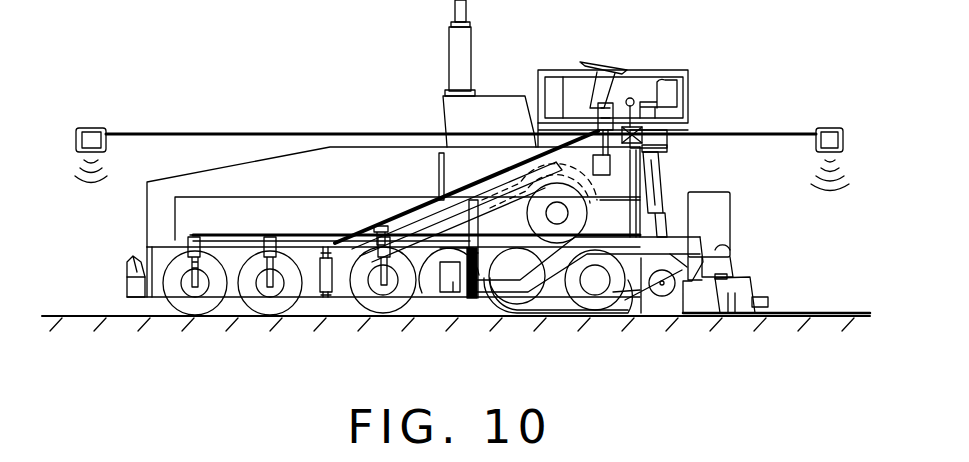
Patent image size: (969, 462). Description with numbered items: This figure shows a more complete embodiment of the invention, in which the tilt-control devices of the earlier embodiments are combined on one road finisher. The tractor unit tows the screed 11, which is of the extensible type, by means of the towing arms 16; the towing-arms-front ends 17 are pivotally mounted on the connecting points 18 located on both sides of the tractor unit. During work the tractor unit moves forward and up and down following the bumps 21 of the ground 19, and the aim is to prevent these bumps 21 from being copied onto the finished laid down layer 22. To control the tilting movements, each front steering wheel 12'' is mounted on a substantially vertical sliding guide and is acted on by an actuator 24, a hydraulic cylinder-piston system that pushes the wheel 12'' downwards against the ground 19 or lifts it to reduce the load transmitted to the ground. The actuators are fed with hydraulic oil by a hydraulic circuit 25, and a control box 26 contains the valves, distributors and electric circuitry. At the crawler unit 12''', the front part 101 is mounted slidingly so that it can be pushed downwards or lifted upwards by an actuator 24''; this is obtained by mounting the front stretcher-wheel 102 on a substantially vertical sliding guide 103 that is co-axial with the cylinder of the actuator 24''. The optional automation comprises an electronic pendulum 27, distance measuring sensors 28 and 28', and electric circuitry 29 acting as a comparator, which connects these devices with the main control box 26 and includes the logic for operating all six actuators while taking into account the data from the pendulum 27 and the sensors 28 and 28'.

The screed 11 is at (703, 300).
The steering wheel 12'' is at (232, 303).
The crawler unit 12''' is at (553, 341).
The towing arms 16 is at (618, 310).
The towing-arms-front ends 17 is at (477, 303).
The connecting points 18 is at (465, 287).
The ground 19 is at (127, 324).
The bumps 21 is at (668, 315).
The laid down layer 22 is at (870, 318).
The actuator 24 is at (161, 302).
The actuator 24'' is at (356, 205).
The hydraulic circuit 25 is at (445, 185).
The control box 26 is at (600, 100).
The electronic pendulum 27 is at (630, 125).
The distance measuring sensor 28 is at (830, 138).
The distance measuring sensor 28' is at (80, 119).
The electric circuitry 29 is at (135, 126).
The front part 101 is at (350, 307).
The front stretcher-wheel 102 is at (383, 298).
The sliding guide 103 is at (345, 240).